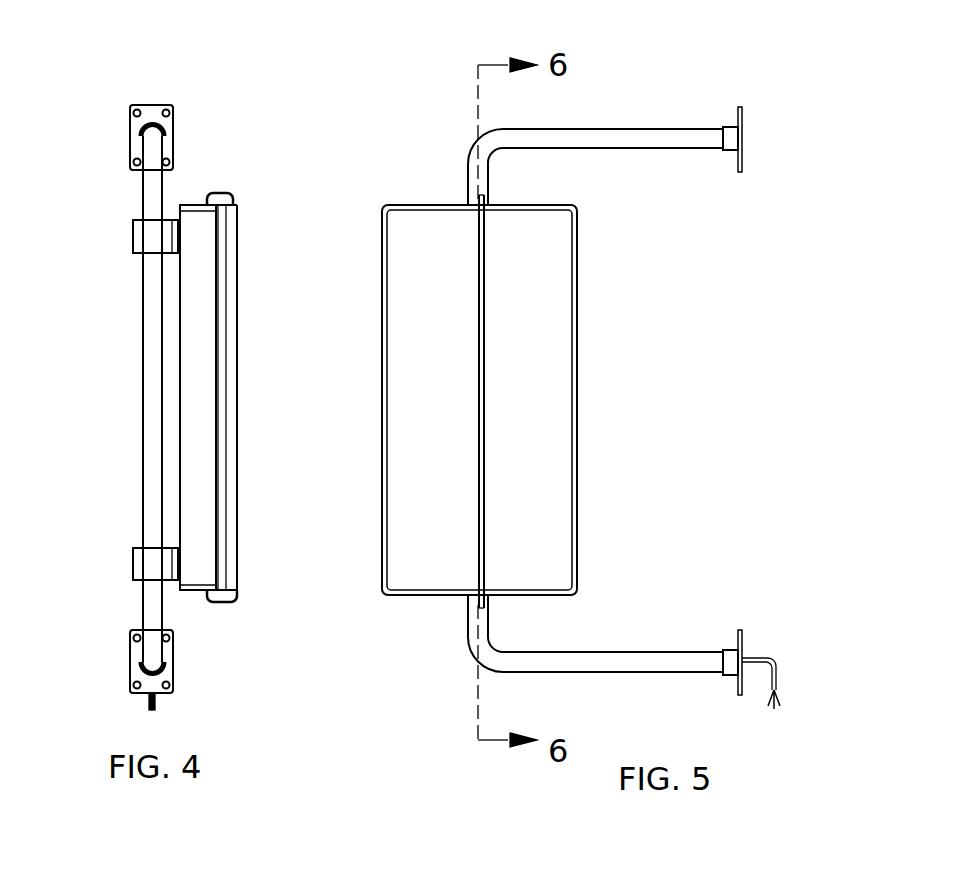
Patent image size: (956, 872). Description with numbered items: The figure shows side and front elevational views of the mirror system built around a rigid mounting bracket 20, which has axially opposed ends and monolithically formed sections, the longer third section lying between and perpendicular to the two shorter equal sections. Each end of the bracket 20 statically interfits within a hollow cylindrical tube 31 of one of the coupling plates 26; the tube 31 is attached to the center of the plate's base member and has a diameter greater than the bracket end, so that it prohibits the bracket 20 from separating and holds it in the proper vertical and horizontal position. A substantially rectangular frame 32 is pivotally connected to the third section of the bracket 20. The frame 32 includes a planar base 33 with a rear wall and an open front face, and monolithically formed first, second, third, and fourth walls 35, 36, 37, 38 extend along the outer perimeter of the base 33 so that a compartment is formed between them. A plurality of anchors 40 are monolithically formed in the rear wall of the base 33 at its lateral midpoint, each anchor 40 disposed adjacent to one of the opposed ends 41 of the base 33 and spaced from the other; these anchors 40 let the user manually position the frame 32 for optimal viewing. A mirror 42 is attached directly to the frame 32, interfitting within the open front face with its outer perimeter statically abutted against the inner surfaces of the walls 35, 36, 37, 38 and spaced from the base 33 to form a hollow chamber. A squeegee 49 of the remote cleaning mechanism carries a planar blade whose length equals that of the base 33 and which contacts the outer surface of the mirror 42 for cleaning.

In FIG. 4, the rigid mounting bracket 20 is at (155, 183).
In FIG. 5, the rigid mounting bracket 20 is at (636, 130).
In FIG. 4, the coupling plates 26 is at (150, 105).
In FIG. 5, the coupling plates 26 is at (742, 122).
In FIG. 5, the hollow cylindrical tube 31 is at (728, 127).
In FIG. 4, the frame 32 is at (200, 272).
In FIG. 5, the frame 32 is at (578, 343).
In FIG. 4, the planar base 33 is at (172, 452).
In FIG. 5, the first wall 35 is at (410, 205).
In FIG. 5, the second wall 36 is at (414, 596).
In FIG. 5, the third wall 37 is at (383, 476).
In FIG. 5, the fourth wall 38 is at (578, 486).
In FIG. 4, the anchors 40 is at (140, 232).
In FIG. 4, the opposed ends of the base 41 is at (181, 208).
In FIG. 5, the mirror 42 is at (535, 380).
In FIG. 5, the squeegee 49 is at (481, 285).